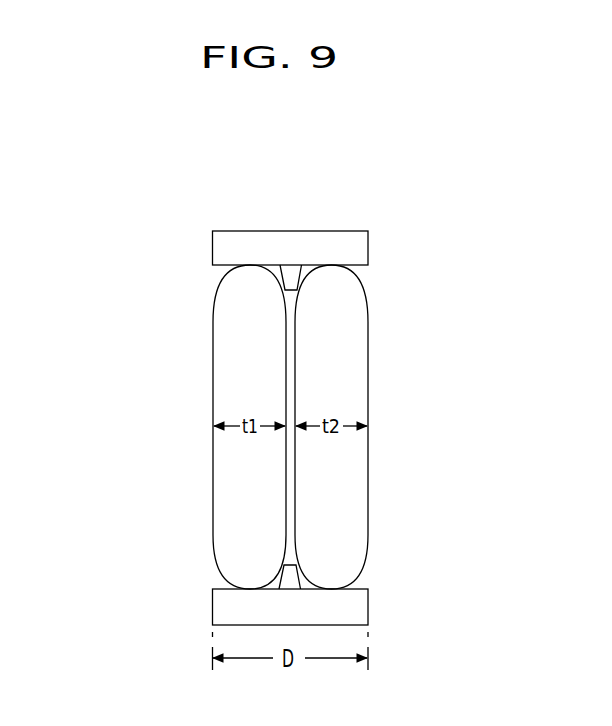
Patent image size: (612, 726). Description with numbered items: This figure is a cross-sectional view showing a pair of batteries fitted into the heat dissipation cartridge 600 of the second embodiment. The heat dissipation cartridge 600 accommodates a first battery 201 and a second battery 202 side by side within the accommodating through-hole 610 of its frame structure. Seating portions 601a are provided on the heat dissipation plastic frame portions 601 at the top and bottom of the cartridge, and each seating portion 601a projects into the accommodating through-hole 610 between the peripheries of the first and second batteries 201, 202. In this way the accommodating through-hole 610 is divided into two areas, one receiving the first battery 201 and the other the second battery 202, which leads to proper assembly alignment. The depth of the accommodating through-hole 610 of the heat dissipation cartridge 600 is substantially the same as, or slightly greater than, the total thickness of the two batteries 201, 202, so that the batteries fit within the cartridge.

The heat dissipation cartridge 600 is at (308, 172).
The heat dissipation plastic frame portion 601 is at (348, 243).
The seating portion 601a is at (290, 286).
The accommodating through-hole 610 is at (212, 582).
The first battery 201 is at (222, 394).
The second battery 202 is at (338, 400).